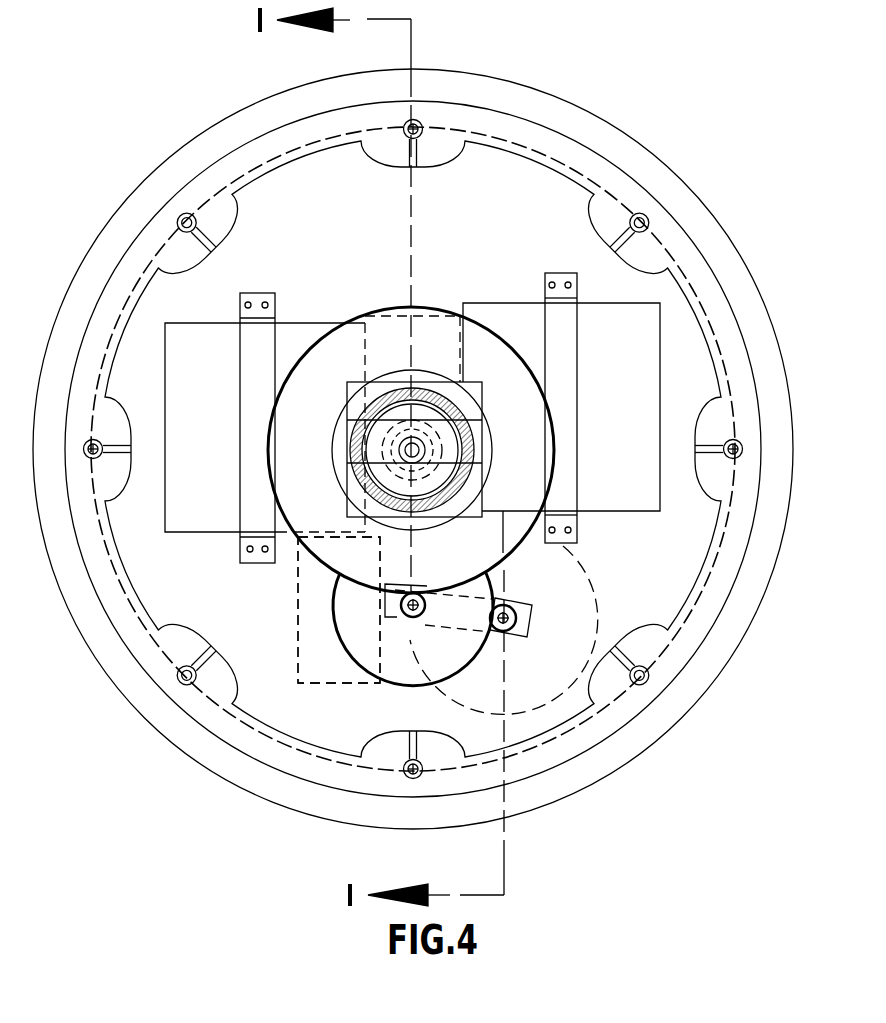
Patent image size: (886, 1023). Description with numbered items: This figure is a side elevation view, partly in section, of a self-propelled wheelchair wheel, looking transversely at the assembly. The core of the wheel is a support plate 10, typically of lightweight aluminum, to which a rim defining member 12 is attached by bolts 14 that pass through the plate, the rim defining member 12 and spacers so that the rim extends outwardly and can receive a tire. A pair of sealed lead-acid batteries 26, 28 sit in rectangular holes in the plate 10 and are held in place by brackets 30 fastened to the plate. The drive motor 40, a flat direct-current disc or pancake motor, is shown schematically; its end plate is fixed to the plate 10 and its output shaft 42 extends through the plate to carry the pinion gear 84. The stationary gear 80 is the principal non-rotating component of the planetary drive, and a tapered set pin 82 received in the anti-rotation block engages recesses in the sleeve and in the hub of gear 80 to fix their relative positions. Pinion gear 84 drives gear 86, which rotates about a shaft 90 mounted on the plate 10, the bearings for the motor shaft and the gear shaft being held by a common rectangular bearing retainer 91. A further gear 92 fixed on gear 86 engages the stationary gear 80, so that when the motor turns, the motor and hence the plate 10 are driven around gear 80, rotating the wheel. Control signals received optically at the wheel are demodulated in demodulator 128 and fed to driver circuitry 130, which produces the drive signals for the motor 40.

The support plate 10 is at (498, 248).
The rim defining member 12 is at (693, 260).
The bolts 14 is at (646, 219).
The battery 26 is at (205, 510).
The battery 28 is at (633, 403).
The brackets 30 is at (563, 282).
The drive motor 40 is at (590, 578).
The motor output shaft 42 is at (516, 618).
The gear 80 is at (376, 333).
The tapered set pin 82 is at (352, 462).
The pinion gear 84 is at (478, 632).
The gear 86 is at (428, 648).
The shaft 90 is at (404, 605).
The bearing retainer 91 is at (457, 616).
The further gear 92 is at (408, 617).
The demodulator 128 is at (312, 668).
The driver circuitry 130 is at (312, 668).